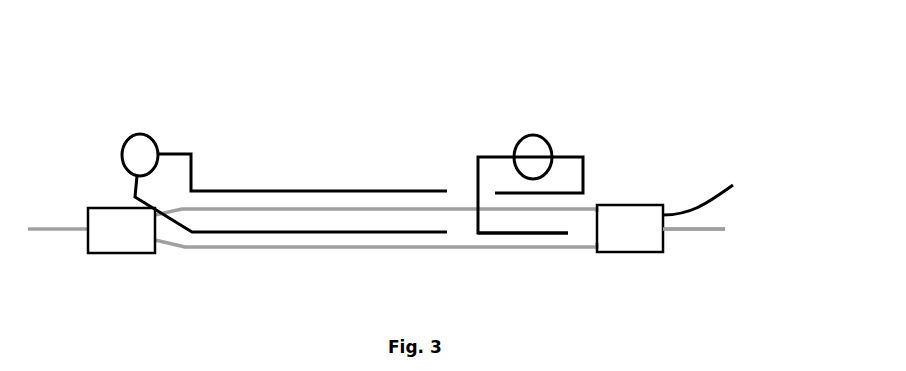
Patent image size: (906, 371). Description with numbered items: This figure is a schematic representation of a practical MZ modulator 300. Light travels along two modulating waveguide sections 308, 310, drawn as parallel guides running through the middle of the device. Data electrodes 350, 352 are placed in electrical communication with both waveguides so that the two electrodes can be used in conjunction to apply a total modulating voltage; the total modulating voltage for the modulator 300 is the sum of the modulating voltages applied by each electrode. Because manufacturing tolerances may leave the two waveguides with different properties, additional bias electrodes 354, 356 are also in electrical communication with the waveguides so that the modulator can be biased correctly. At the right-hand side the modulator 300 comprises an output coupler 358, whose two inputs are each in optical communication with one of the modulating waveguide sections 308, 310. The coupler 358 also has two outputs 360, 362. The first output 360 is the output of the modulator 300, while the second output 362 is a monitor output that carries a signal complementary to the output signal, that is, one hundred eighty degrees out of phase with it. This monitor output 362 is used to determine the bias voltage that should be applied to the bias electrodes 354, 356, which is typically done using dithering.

The MZ modulator 300 is at (260, 86).
The modulating waveguide section 308 is at (360, 208).
The modulating waveguide section 310 is at (301, 249).
The data electrode 350 is at (258, 190).
The data electrode 352 is at (192, 243).
The bias electrode 354 is at (556, 190).
The bias electrode 356 is at (520, 234).
The output coupler 358 is at (640, 205).
The first output 360 is at (700, 233).
The second output 362 is at (710, 200).